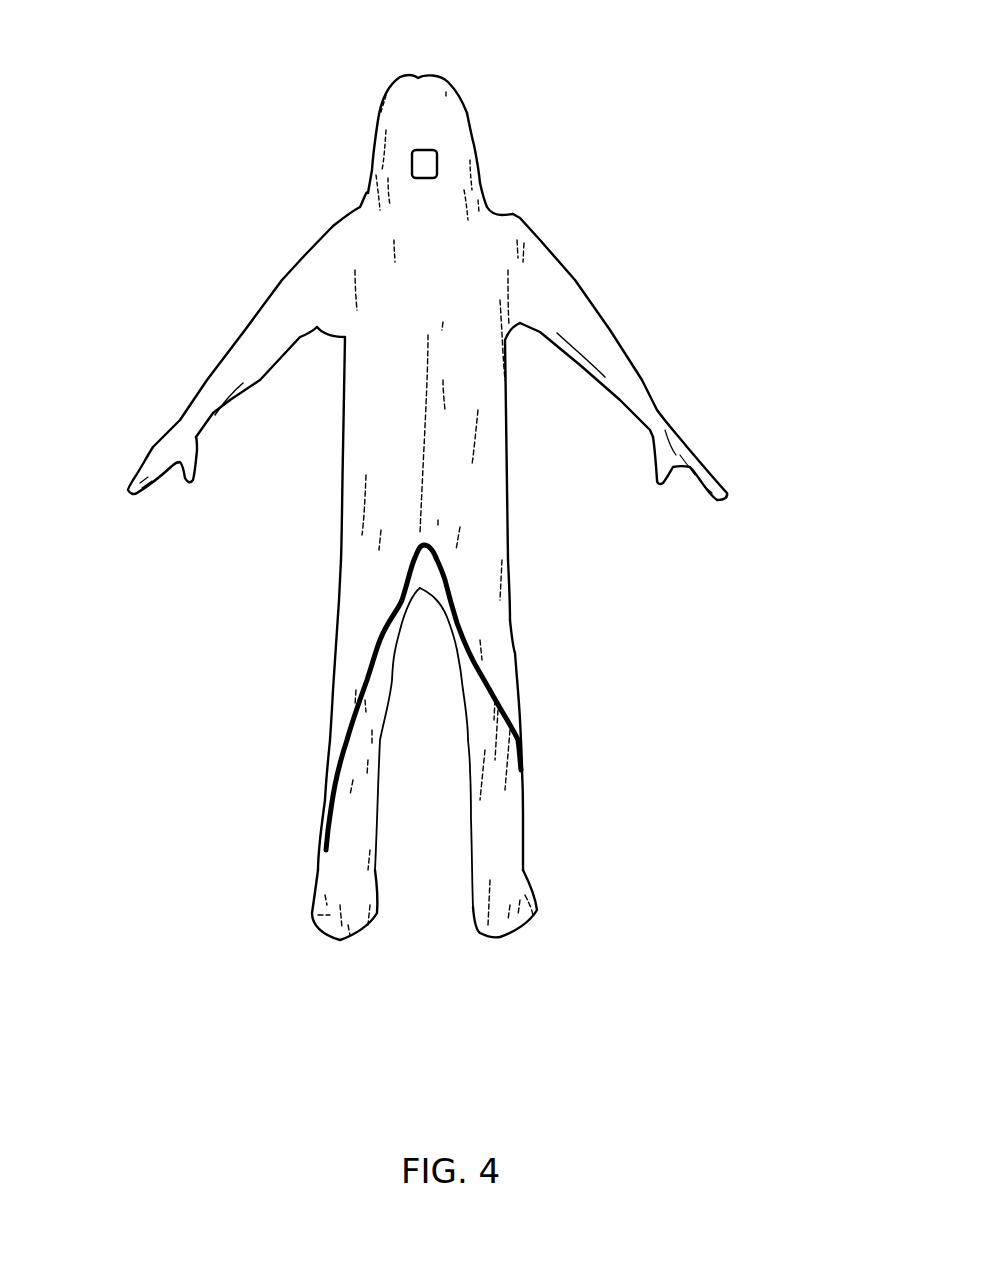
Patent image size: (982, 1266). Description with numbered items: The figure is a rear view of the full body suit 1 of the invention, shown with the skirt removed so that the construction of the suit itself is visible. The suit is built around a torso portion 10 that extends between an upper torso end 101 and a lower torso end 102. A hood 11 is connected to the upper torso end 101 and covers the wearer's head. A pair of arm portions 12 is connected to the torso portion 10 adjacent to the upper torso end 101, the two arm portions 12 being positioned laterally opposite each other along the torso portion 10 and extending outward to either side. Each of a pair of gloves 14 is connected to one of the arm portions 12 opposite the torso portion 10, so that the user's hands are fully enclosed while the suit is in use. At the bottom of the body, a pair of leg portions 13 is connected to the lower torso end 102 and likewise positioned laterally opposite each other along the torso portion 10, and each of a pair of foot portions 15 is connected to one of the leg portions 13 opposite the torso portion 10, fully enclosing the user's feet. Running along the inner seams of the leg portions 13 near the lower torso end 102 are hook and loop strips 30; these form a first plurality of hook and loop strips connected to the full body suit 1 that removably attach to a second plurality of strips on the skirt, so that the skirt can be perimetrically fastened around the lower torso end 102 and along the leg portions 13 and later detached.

The full body suit 1 is at (197, 182).
The torso portion 10 is at (450, 275).
The hood 11 is at (488, 45).
The pair of arm portions 12 is at (205, 312).
The pair of leg portions 13 is at (297, 654).
The pair of gloves 14 is at (98, 510).
The pair of foot portions 15 is at (283, 944).
The hook and loop strips 30 is at (340, 740).
The upper torso end 101 is at (345, 197).
The lower torso end 102 is at (527, 535).